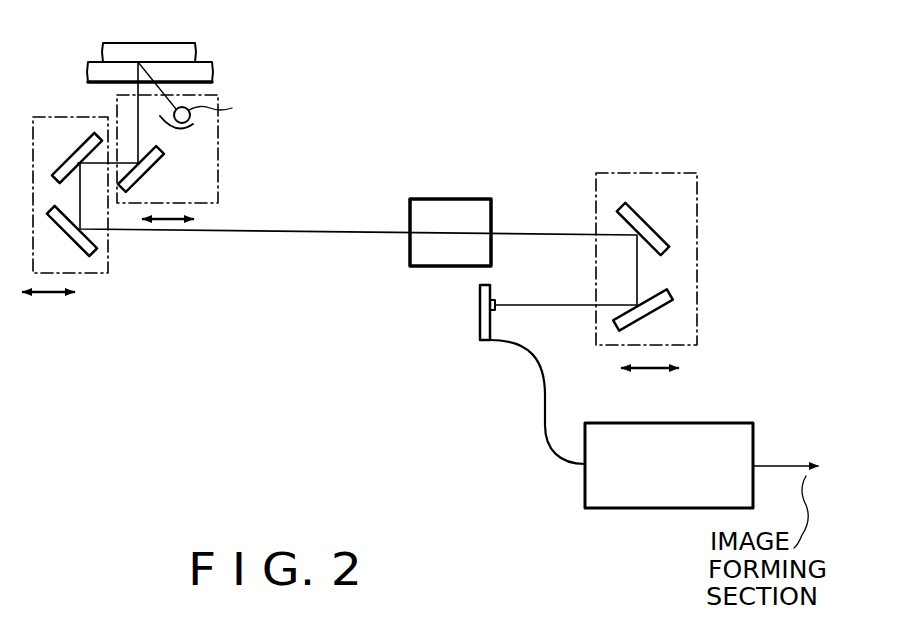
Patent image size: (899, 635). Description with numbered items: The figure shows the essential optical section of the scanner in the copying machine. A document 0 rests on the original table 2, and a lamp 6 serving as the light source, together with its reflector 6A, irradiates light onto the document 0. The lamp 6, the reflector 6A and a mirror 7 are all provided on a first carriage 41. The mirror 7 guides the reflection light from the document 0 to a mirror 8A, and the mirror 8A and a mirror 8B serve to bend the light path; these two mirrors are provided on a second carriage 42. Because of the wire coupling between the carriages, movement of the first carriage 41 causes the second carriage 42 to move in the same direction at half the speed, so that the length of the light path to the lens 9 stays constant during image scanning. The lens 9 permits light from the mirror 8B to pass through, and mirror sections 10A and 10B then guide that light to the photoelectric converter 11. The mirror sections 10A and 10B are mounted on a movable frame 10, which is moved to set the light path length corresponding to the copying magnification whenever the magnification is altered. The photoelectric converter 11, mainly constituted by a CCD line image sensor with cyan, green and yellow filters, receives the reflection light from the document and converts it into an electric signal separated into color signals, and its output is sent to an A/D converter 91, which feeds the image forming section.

The document 0 is at (147, 50).
The original table 2 is at (222, 52).
The lamp 6 is at (185, 124).
The reflector 6A is at (224, 110).
The mirror 7 is at (150, 176).
The first carriage 41 is at (218, 143).
The mirror 8A is at (66, 160).
The mirror 8B is at (68, 238).
The second carriage 42 is at (108, 262).
The lens 9 is at (443, 205).
The movable frame 10 is at (697, 233).
The mirror section 10A is at (640, 215).
The mirror section 10B is at (670, 300).
The photoelectric converter 11 is at (496, 301).
The A/D converter 91 is at (714, 423).